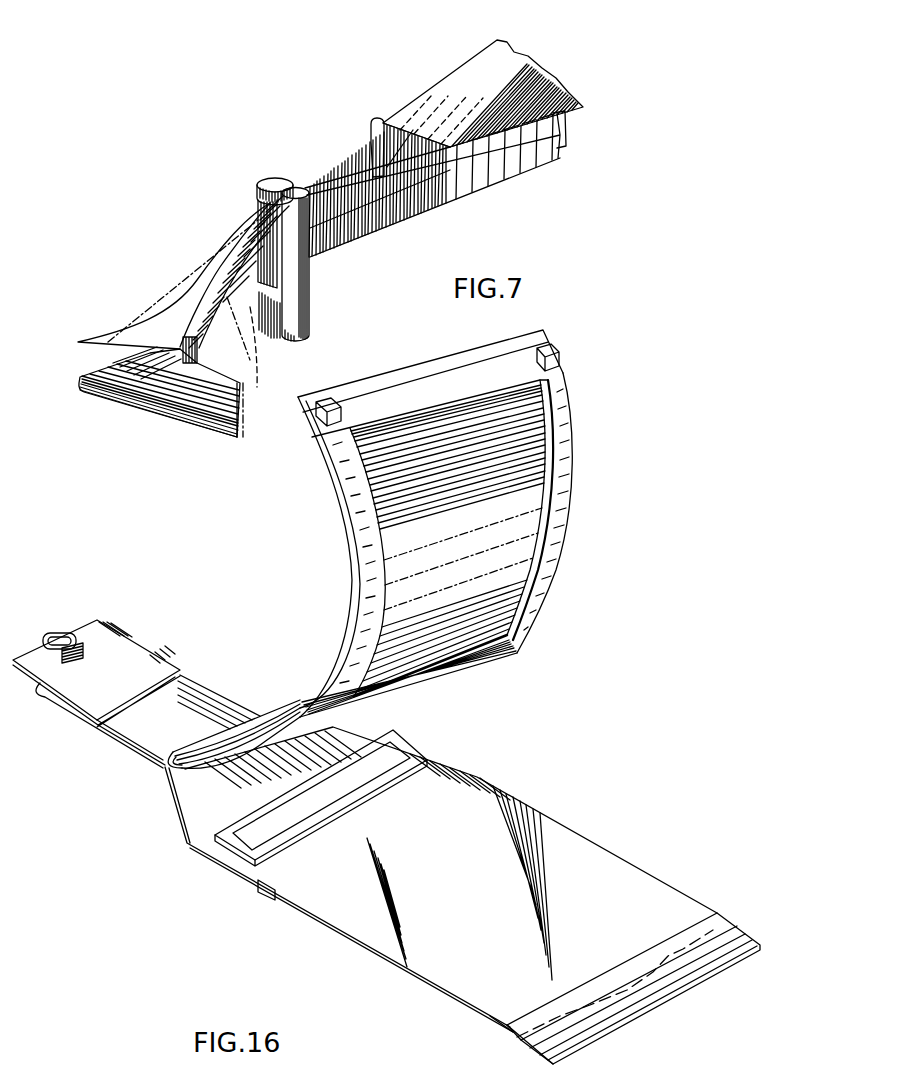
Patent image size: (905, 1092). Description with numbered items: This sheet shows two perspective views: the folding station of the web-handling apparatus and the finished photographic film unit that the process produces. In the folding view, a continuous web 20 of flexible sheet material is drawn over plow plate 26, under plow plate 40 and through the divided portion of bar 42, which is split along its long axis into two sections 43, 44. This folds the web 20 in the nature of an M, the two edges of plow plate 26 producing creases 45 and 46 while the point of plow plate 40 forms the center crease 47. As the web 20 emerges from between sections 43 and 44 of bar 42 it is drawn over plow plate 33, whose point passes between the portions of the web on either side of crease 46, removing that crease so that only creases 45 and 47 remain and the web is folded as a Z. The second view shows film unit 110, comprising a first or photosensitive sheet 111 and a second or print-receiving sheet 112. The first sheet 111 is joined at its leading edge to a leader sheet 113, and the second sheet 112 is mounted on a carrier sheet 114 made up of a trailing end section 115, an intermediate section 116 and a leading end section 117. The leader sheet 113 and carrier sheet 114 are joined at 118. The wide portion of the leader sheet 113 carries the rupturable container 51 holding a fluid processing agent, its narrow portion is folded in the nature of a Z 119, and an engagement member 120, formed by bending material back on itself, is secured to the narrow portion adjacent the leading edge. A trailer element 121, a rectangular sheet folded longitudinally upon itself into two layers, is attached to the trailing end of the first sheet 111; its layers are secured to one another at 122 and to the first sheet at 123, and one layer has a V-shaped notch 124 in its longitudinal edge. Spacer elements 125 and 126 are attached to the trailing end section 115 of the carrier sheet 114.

In FIG. 7, the continuous web 20 is at (476, 172).
In FIG. 7, the plow plate 26 is at (500, 45).
In FIG. 7, the plow plate 33 is at (247, 396).
In FIG. 7, the plow plate 40 is at (377, 118).
In FIG. 7, the bar 42 is at (306, 312).
In FIG. 7, the section of bar 43 is at (292, 188).
In FIG. 7, the section of bar 44 is at (268, 184).
In FIG. 7, the crease 45 is at (343, 170).
In FIG. 7, the crease 46 is at (343, 184).
In FIG. 7, the center crease 47 is at (148, 366).
In FIG. 16, the rupturable container 51 is at (390, 767).
In FIG. 16, the film unit 110 is at (246, 688).
In FIG. 16, the first or photosensitive sheet 111 is at (509, 938).
In FIG. 16, the second or print-receiving sheet 112 is at (390, 505).
In FIG. 16, the leader sheet 113 is at (260, 875).
In FIG. 16, the carrier sheet 114 is at (486, 672).
In FIG. 16, the trailing end section 115 is at (439, 392).
In FIG. 16, the intermediate section 116 is at (568, 468).
In FIG. 16, the leading end section 117 is at (263, 727).
In FIG. 16, the joint 118 is at (165, 772).
In FIG. 16, the Z fold 119 is at (60, 714).
In FIG. 16, the engagement member 120 is at (60, 636).
In FIG. 16, the trailer element 121 is at (733, 938).
In FIG. 16, the seal 122 is at (523, 1040).
In FIG. 16, the attachment 123 is at (510, 1032).
In FIG. 16, the V-shaped notch 124 is at (670, 990).
In FIG. 16, the spacer element 125 is at (328, 411).
In FIG. 16, the spacer element 126 is at (553, 352).